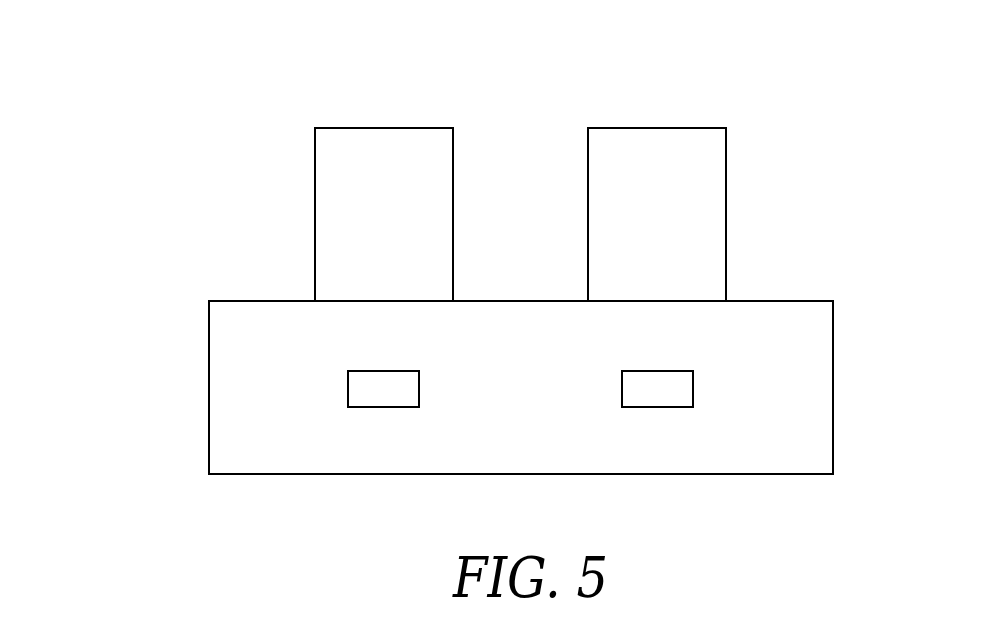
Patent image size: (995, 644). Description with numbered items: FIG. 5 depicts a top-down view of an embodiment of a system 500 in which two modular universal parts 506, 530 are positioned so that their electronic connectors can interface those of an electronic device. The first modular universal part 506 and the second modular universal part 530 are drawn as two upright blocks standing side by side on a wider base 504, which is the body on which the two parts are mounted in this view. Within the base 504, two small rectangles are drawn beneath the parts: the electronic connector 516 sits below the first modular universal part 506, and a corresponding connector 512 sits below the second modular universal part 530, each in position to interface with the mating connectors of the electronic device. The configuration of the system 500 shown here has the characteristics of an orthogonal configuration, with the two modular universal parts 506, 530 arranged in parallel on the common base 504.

The system 500 is at (67, 70).
The substrate 504 is at (833, 387).
The modular universal part 506 is at (384, 127).
The modular universal part 530 is at (657, 127).
The electronic connector 516 is at (383, 408).
The second embedded component 512 is at (655, 408).